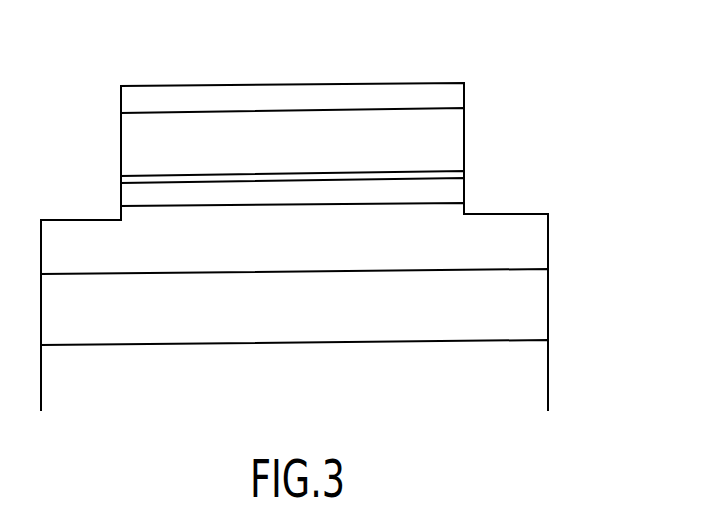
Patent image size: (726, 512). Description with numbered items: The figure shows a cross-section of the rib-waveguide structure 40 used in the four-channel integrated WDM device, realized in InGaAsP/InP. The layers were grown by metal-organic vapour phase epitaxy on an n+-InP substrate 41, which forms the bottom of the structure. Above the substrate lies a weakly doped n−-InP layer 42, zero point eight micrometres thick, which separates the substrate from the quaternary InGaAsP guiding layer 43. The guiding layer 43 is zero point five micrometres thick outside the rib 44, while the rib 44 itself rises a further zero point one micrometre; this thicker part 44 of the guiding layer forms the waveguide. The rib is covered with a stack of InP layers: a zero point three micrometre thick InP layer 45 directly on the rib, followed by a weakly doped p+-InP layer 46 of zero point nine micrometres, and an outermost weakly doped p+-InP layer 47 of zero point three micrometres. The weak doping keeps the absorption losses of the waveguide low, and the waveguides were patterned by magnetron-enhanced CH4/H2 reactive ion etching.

The rib-waveguide structure 40 is at (58, 76).
The n+-InP substrate 41 is at (523, 373).
The weakly doped n−-InP layer 42 is at (526, 308).
The quaternary InGaAsP guiding layer 43 is at (528, 243).
The rib 44 is at (467, 208).
The InP layer 45 is at (457, 192).
The weakly doped p+-InP layer 46 is at (450, 137).
The outermost weakly doped p+-InP layer 47 is at (456, 93).